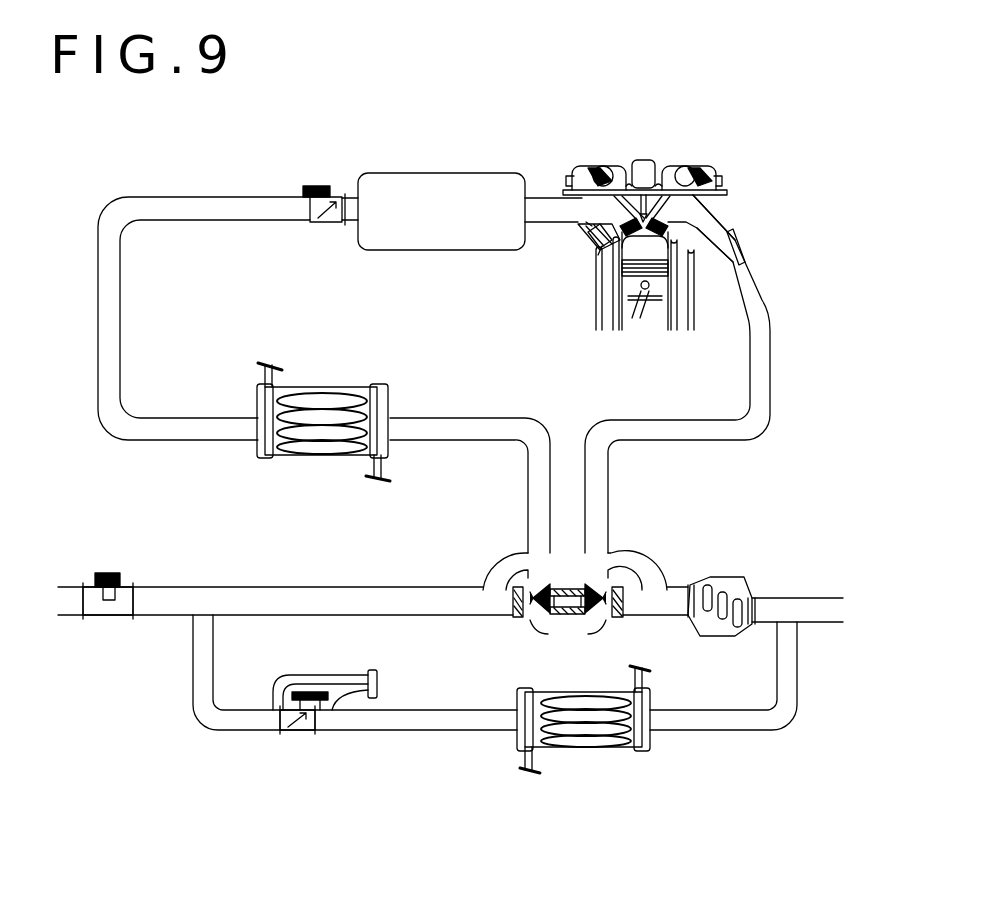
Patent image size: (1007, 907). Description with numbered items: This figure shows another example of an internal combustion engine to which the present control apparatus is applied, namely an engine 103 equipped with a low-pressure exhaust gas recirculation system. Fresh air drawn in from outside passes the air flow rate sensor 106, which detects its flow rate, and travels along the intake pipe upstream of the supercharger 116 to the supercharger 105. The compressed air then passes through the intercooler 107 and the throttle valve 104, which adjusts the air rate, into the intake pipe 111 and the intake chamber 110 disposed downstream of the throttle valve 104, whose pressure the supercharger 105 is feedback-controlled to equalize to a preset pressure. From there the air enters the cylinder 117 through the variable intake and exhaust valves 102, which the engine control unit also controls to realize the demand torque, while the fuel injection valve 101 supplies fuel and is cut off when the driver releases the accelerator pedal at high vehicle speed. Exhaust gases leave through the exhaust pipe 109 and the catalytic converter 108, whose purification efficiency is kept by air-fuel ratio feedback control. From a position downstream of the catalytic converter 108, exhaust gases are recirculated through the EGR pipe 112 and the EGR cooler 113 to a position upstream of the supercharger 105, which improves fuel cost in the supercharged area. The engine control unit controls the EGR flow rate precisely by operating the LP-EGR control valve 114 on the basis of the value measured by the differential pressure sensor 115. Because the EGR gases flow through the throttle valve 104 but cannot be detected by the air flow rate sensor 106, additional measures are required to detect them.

The fuel injection valve 101 is at (578, 258).
The variable intake and exhaust valves 102 is at (687, 145).
The engine 103 is at (699, 266).
The throttle valve 104 is at (360, 153).
The supercharger 105 is at (517, 669).
The air flow rate sensor 106 is at (175, 557).
The intercooler 107 is at (357, 377).
The catalytic converter 108 is at (773, 561).
The exhaust pipe 109 is at (706, 461).
The intake chamber 110 is at (498, 161).
The intake pipe 111 is at (258, 164).
The EGR pipe 112 is at (727, 781).
The EGR cooler 113 is at (542, 785).
The LP-EGR control valve 114 is at (245, 781).
The differential pressure sensor 115 is at (330, 746).
The intake pipe upstream of the supercharger 116 is at (343, 573).
The cylinder 117 is at (599, 289).